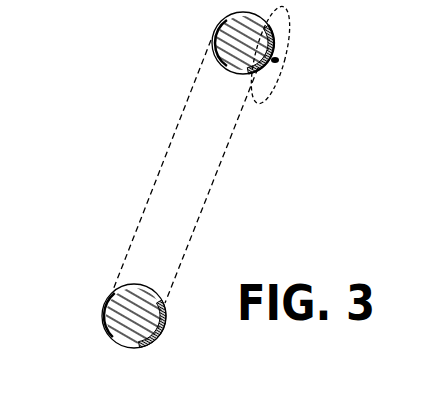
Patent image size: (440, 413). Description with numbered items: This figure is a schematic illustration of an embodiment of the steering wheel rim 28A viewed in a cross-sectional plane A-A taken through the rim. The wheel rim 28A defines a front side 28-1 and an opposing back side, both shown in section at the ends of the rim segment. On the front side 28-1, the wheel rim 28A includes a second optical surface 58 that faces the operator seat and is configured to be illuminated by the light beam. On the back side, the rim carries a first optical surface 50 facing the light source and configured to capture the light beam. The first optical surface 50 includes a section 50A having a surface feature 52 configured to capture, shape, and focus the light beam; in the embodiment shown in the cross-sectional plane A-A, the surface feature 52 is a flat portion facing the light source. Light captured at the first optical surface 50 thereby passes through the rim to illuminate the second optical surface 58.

The wheel rim 28A is at (148, 165).
The front side 28-1 is at (186, 99).
The second optical surface 58 is at (205, 28).
The first optical surface 50 is at (273, 59).
The surface feature 52 is at (270, 45).
The section 50A is at (288, 15).
The cross-sectional plane A-A is at (160, 32).